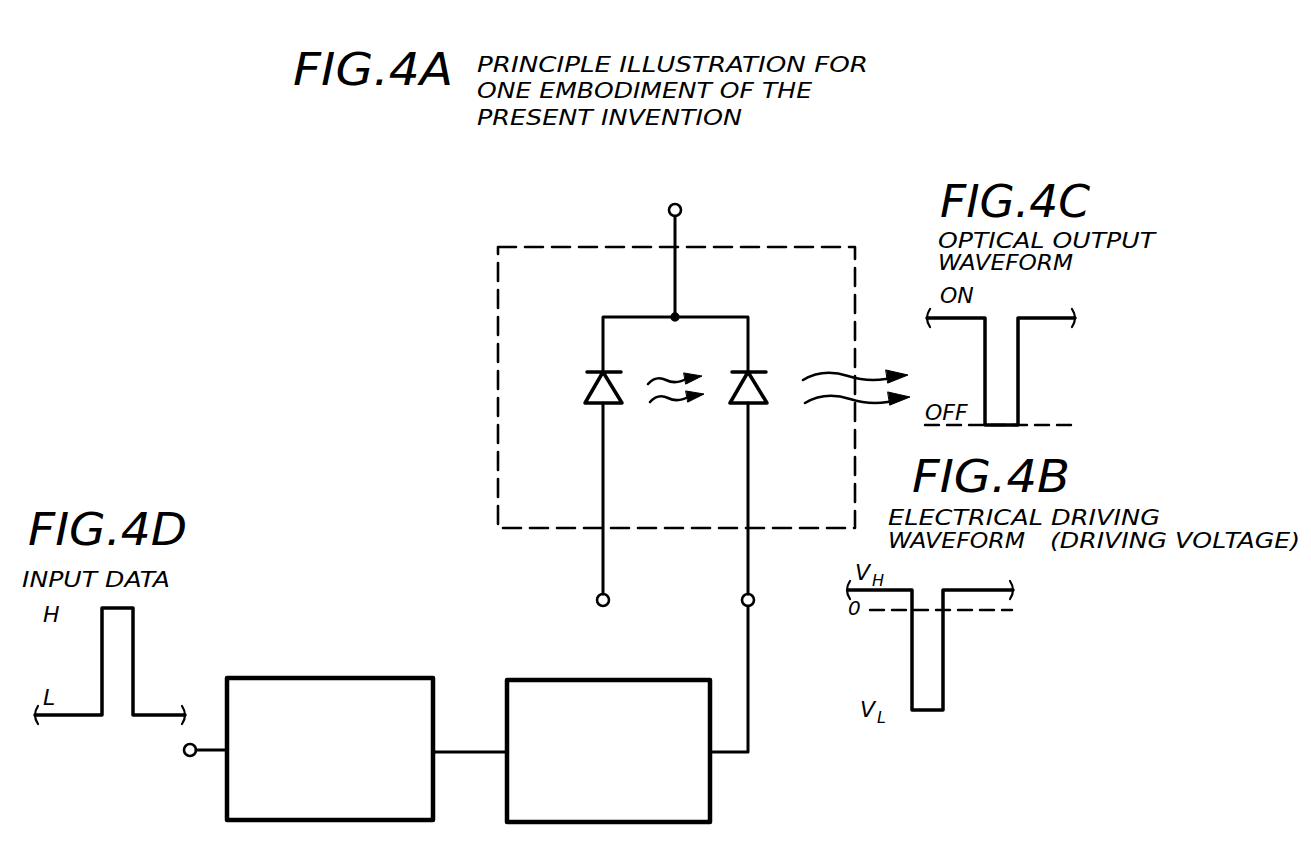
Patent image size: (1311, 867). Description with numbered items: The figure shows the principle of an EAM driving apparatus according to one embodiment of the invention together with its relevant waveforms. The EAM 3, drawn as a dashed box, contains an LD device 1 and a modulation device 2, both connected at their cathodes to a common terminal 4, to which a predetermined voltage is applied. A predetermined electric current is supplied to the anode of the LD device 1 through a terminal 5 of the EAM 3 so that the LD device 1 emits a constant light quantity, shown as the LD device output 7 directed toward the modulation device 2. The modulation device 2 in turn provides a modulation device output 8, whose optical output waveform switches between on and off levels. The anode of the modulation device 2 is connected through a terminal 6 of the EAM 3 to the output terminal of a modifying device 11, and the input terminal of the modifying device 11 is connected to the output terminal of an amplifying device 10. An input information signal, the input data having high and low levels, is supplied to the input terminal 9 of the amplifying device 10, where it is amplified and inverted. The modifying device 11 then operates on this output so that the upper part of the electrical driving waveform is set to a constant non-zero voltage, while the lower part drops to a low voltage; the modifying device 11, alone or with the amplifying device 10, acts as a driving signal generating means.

The laser diode device 1 is at (590, 405).
The modulation device 2 is at (735, 405).
The EAM 3 is at (778, 246).
The reference voltage terminal 4 is at (682, 210).
The bias terminal 5 is at (610, 602).
The driving terminal 6 is at (755, 602).
The LD device output 7 is at (664, 399).
The modulation device output 8 is at (818, 405).
The input terminal 9 is at (190, 757).
The amplifying device 10 is at (300, 678).
The modifying device 11 is at (530, 680).